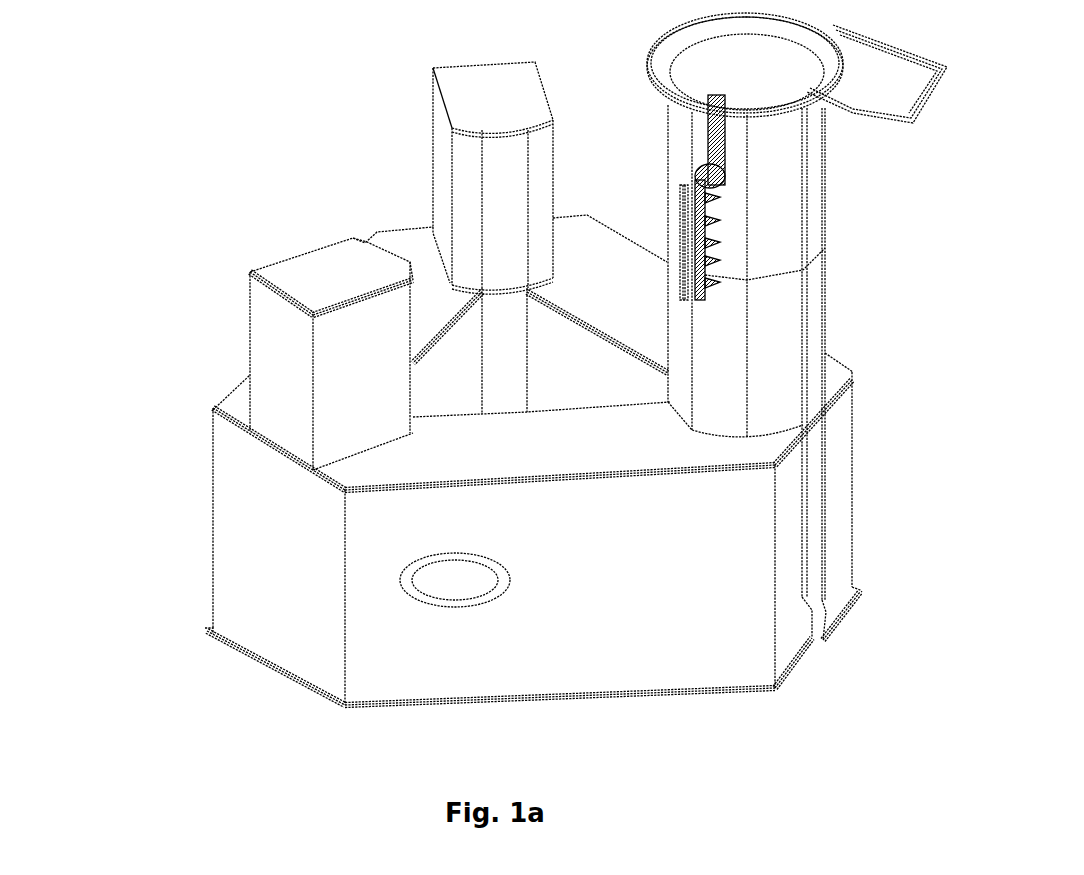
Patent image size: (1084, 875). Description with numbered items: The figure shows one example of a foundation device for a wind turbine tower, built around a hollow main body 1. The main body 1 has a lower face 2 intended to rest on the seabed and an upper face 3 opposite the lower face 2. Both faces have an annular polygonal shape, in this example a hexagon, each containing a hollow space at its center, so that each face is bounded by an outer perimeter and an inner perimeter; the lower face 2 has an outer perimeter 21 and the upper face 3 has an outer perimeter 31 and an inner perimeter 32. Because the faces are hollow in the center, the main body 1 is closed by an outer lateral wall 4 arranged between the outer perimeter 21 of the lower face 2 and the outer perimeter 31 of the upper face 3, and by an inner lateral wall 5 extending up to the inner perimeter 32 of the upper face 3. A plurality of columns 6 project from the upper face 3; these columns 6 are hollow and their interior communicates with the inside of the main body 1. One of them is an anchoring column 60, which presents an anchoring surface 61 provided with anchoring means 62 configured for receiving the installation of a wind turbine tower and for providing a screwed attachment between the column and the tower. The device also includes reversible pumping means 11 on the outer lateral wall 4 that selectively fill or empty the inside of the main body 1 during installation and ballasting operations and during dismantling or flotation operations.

The main body 1 is at (152, 535).
The lower face 2 is at (545, 705).
The upper face 3 is at (427, 260).
The outer lateral wall 4 is at (265, 545).
The inner lateral wall 5 is at (560, 358).
The columns 6 is at (500, 180).
The reversible pumping means 11 is at (455, 585).
The outer perimeter of the lower face 21 is at (600, 700).
The outer perimeter of the upper face 31 is at (573, 477).
The inner perimeter of the upper face 32 is at (447, 413).
The anchoring column 60 is at (722, 343).
The anchoring surface 61 is at (765, 70).
The anchoring means 62 is at (823, 72).